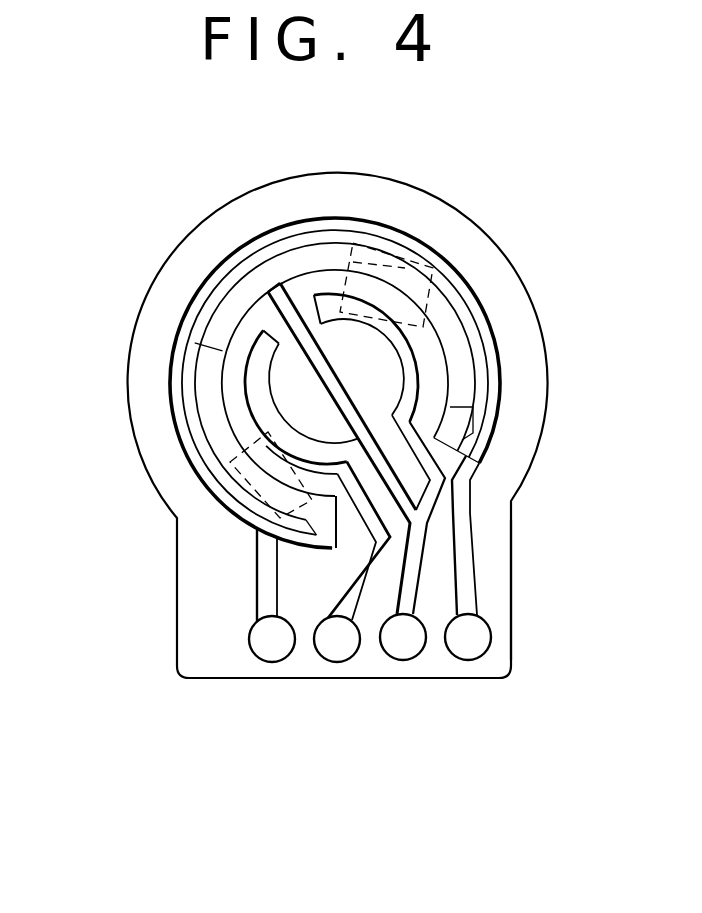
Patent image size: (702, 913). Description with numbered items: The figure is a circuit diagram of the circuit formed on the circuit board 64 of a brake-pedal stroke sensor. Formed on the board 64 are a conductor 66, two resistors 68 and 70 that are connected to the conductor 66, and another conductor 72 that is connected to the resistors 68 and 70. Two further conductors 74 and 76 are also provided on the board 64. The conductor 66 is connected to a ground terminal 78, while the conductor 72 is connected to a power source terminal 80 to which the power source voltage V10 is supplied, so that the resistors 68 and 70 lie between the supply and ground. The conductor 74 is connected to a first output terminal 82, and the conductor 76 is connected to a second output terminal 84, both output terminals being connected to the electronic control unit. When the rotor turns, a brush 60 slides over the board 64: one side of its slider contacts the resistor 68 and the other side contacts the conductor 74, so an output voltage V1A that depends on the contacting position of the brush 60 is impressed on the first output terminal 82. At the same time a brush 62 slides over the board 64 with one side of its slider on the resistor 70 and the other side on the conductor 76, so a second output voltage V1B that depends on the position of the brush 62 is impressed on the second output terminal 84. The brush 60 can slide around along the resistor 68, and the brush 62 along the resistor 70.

The brush 60 is at (400, 268).
The brush 62 is at (225, 458).
The circuit board 64 is at (548, 385).
The conductor 66 is at (325, 345).
The resistor 68 is at (447, 293).
The resistor 70 is at (200, 395).
The conductor 72 is at (220, 272).
The conductor 74 is at (470, 532).
The conductor 76 is at (357, 573).
The ground terminal 78 is at (410, 661).
The power source terminal 80 is at (262, 670).
The first output terminal 82 is at (478, 660).
The second output terminal 84 is at (340, 666).